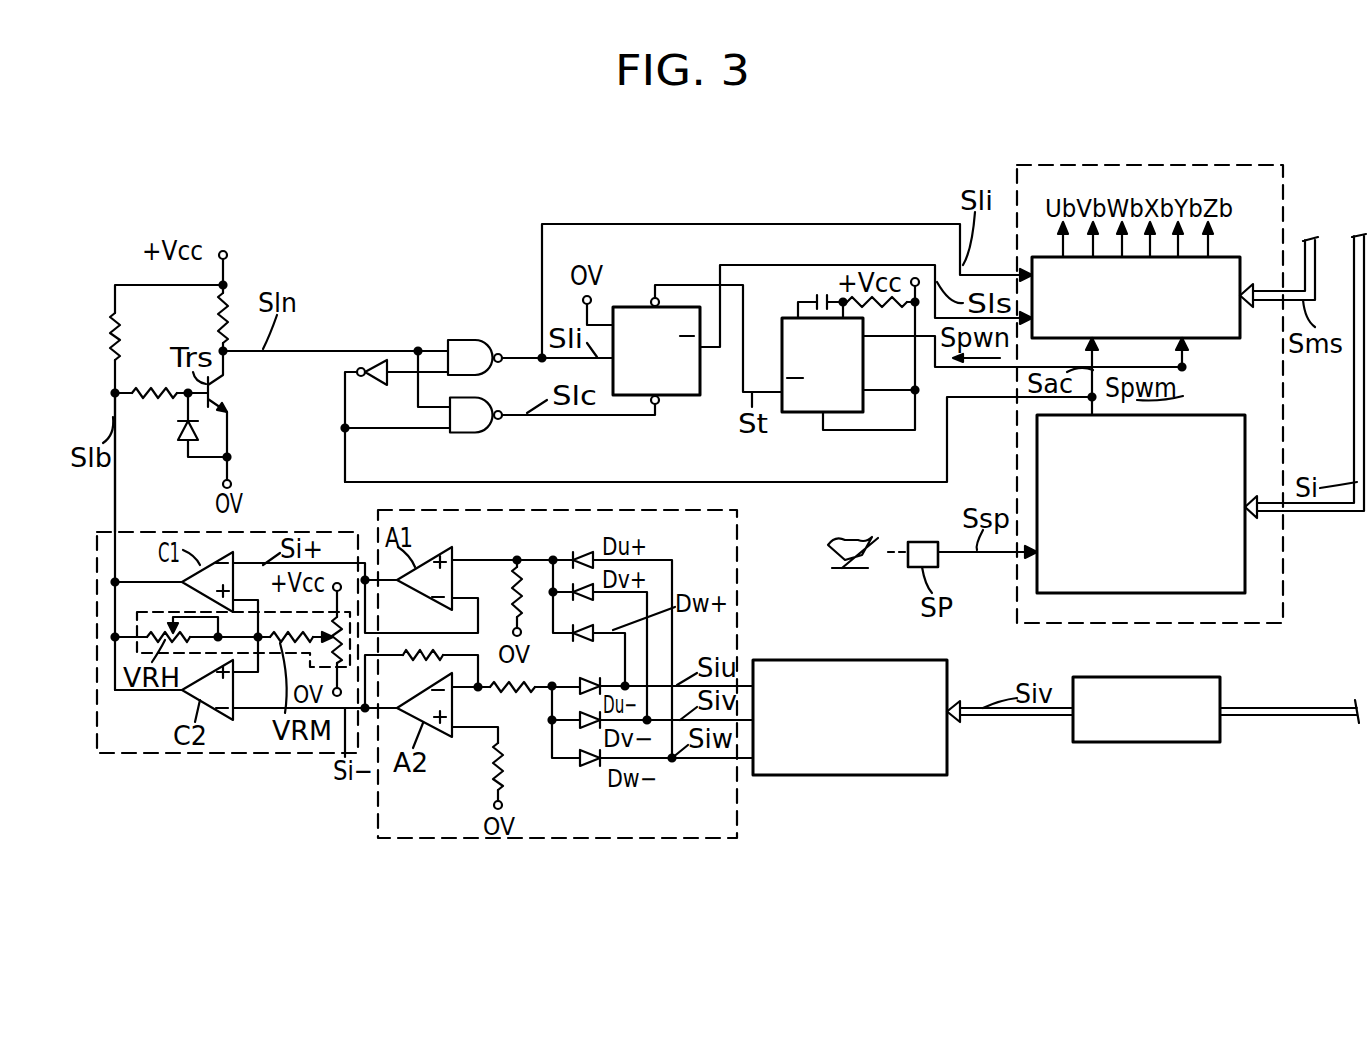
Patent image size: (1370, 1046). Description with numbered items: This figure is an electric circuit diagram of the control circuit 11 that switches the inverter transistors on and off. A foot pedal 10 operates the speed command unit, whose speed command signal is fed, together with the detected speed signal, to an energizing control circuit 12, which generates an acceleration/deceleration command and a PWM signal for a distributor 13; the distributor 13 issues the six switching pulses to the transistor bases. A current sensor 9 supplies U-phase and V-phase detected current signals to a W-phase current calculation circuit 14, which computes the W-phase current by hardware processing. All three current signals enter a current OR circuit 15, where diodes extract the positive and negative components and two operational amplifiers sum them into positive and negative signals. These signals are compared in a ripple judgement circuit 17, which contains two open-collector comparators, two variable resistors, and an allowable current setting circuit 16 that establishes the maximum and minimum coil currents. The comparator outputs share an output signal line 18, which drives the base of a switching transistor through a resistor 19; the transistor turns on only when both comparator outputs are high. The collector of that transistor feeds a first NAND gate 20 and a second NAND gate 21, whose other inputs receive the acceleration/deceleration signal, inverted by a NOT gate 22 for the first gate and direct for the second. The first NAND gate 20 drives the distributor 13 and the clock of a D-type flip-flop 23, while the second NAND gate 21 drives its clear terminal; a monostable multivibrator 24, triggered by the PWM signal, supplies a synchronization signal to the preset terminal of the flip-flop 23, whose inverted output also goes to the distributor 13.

The current sensor 9 is at (1220, 697).
The foot pedal 10 is at (840, 565).
The control circuit 11 is at (338, 260).
The energizing control circuit 12 is at (1247, 550).
The distributor 13 is at (1210, 338).
The W-phase current calculation circuit 14 is at (860, 775).
The current OR circuit 15 is at (673, 840).
The allowable current setting circuit 16 is at (260, 660).
The ripple judgement circuit 17 is at (193, 755).
The output signal line 18 is at (115, 487).
The resistor 19 is at (160, 387).
The first NAND gate 20 is at (458, 340).
The second NAND gate 21 is at (470, 433).
The NOT gate 22 is at (382, 360).
The D-type flip-flop 23 is at (670, 397).
The monostable multivibrator 24 is at (805, 413).